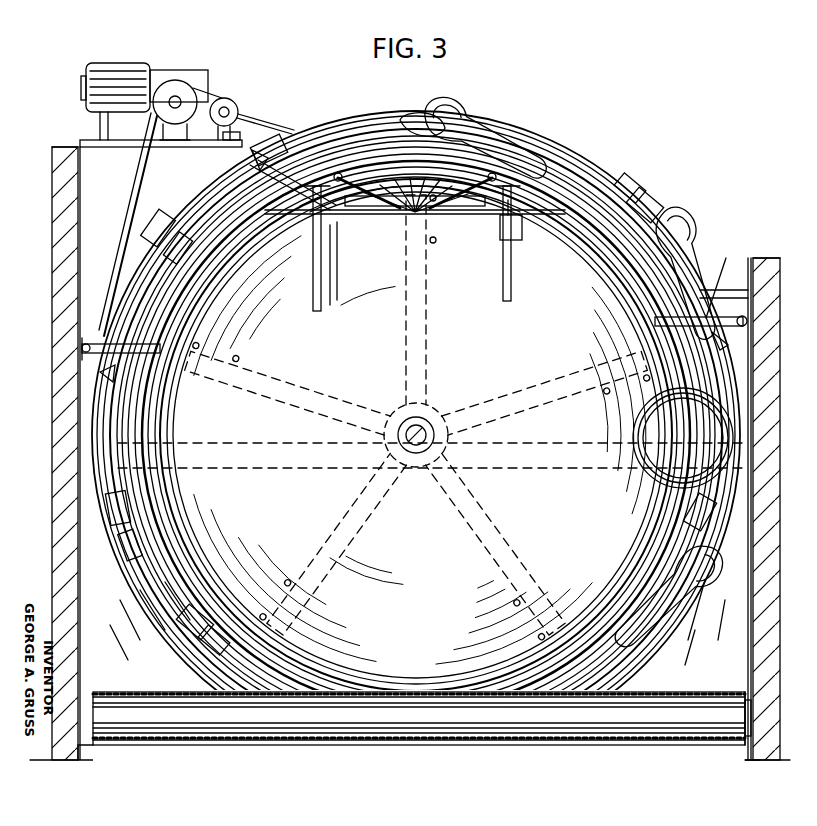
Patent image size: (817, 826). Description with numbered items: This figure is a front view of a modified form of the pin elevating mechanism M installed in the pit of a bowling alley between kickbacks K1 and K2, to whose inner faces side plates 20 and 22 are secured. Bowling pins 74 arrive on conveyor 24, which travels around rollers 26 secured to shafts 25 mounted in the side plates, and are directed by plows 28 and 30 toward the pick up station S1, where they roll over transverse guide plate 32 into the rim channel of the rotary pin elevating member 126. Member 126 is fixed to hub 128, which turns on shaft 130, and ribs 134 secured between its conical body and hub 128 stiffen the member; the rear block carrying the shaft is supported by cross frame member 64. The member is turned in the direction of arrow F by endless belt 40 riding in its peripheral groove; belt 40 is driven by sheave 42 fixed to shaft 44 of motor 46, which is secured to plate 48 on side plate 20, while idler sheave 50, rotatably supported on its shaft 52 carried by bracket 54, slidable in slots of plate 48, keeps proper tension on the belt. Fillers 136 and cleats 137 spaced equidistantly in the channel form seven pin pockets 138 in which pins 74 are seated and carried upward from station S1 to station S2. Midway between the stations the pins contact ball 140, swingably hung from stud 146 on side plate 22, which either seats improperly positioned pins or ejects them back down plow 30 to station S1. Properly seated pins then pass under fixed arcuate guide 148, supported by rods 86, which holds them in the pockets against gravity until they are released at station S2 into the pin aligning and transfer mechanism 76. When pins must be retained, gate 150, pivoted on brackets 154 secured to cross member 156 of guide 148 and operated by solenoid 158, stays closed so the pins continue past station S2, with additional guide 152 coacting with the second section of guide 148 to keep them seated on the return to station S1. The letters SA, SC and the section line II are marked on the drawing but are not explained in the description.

The side plate 20 is at (80, 253).
The side plate 22 is at (753, 258).
The conveyor 24 is at (520, 740).
The shaft 25 is at (745, 712).
The roller 26 is at (448, 712).
The plow 28 is at (182, 698).
The plow 30 is at (680, 690).
The transverse guide plate 32 is at (593, 750).
The endless belt 40 is at (125, 214).
The sheave 42 is at (190, 92).
The shaft 44 is at (176, 96).
The motor 46 is at (125, 72).
The plate 48 is at (172, 143).
The idler sheave 50 is at (226, 110).
The idler pulley 52 is at (241, 111).
The bracket 54 is at (232, 136).
The cross frame member 64 is at (240, 470).
The pins 74 is at (515, 158).
The pin aligning and transfer mechanism 76 is at (362, 214).
The rods 86 is at (322, 286).
The pin elevating member 126 is at (652, 192).
The hub 128 is at (432, 418).
The shaft 130 is at (410, 428).
The ribs 134 is at (425, 368).
The fillers 136 is at (205, 295).
The cleats 137 is at (255, 155).
The pin pockets 138 is at (460, 128).
The ball 140 is at (650, 420).
The stud 146 is at (724, 288).
The fixed guide 148 is at (160, 348).
The gate 150 is at (400, 175).
The additional guide 152 is at (225, 205).
The brackets 154 is at (345, 265).
The cross member 156 is at (340, 245).
The solenoid 158 is at (500, 222).
The pin elevating mechanism M is at (494, 112).
The arrow F is at (470, 346).
The kickback K1 is at (58, 252).
The kickback K2 is at (765, 258).
The pick up station S1 is at (392, 672).
The station S2 is at (418, 222).
The station SA is at (112, 690).
The station SC is at (717, 680).
The section line II is at (465, 200).